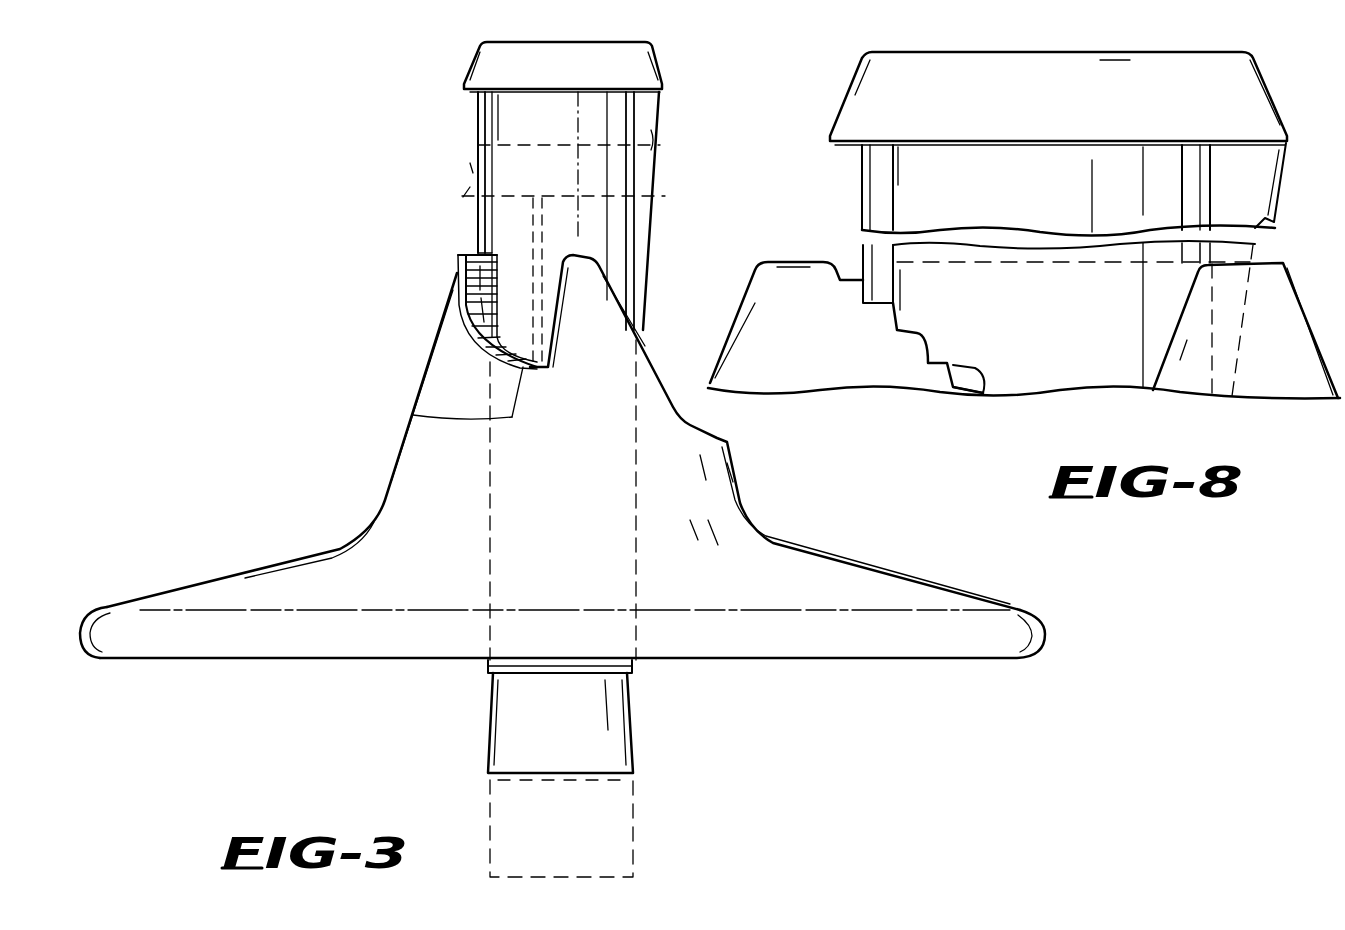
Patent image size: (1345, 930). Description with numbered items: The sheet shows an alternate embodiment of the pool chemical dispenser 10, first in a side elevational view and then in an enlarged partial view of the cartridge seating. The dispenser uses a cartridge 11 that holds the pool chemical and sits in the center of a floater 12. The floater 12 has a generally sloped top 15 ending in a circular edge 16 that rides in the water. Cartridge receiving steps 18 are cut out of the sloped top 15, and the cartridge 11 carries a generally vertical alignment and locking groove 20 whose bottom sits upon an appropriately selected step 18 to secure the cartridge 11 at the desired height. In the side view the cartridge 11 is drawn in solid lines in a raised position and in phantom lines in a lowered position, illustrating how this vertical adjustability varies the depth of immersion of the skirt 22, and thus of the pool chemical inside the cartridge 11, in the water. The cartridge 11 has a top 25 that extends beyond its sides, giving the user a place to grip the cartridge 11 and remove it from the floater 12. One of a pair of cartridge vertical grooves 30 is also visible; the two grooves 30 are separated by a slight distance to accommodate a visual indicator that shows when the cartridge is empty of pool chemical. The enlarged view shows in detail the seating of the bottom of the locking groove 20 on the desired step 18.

In FIG. 3, the pool chemical dispenser 10 is at (382, 312).
In FIG. 3, the cartridge 11 is at (478, 110).
In FIG. 3, the floater 12 is at (865, 565).
In FIG. 3, the sloped top 15 is at (563, 432).
In FIG. 8, the sloped top 15 is at (1024, 321).
In FIG. 3, the circular edge 16 is at (80, 630).
In FIG. 3, the cartridge receiving steps 18 is at (470, 270).
In FIG. 8, the cartridge receiving steps 18 is at (940, 393).
In FIG. 3, the vertical alignment and locking groove 20 is at (478, 210).
In FIG. 8, the vertical alignment and locking groove 20 is at (862, 194).
In FIG. 3, the skirt 22 is at (630, 725).
In FIG. 3, the top 25 is at (660, 72).
In FIG. 8, the top 25 is at (832, 128).
In FIG. 3, the cartridge vertical grooves 30 is at (655, 130).
In FIG. 8, the cartridge vertical grooves 30 is at (1276, 178).